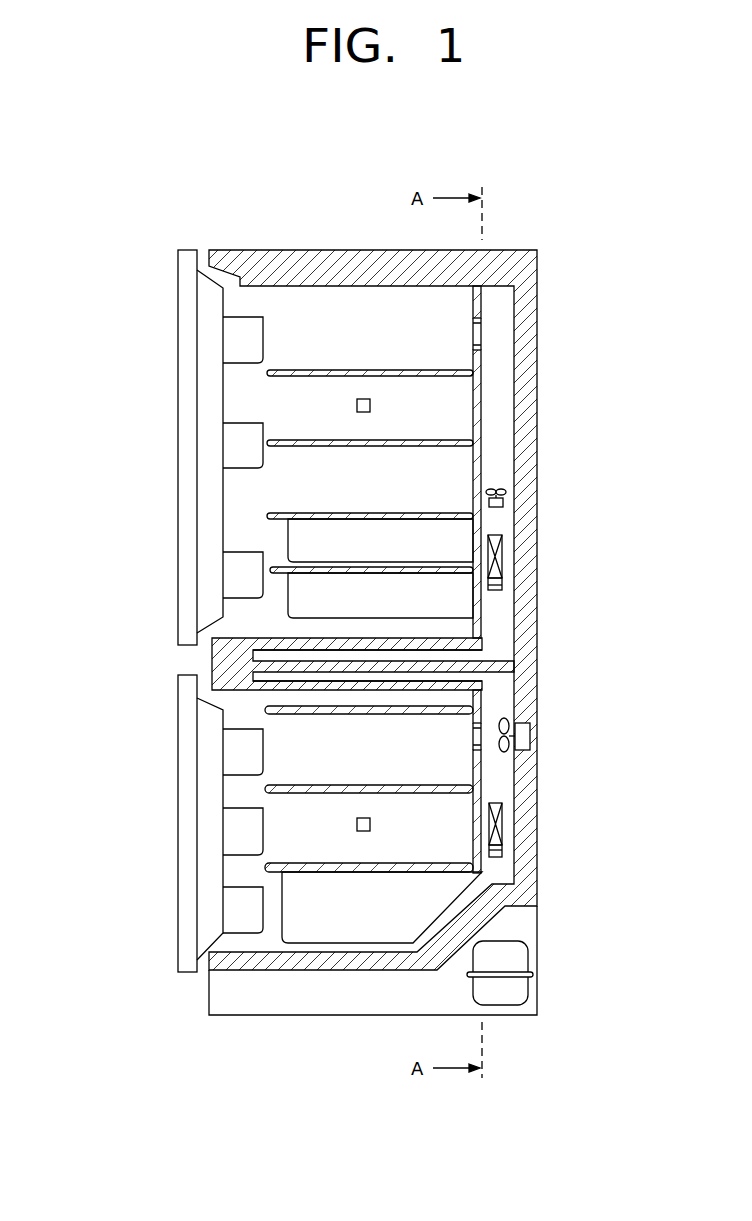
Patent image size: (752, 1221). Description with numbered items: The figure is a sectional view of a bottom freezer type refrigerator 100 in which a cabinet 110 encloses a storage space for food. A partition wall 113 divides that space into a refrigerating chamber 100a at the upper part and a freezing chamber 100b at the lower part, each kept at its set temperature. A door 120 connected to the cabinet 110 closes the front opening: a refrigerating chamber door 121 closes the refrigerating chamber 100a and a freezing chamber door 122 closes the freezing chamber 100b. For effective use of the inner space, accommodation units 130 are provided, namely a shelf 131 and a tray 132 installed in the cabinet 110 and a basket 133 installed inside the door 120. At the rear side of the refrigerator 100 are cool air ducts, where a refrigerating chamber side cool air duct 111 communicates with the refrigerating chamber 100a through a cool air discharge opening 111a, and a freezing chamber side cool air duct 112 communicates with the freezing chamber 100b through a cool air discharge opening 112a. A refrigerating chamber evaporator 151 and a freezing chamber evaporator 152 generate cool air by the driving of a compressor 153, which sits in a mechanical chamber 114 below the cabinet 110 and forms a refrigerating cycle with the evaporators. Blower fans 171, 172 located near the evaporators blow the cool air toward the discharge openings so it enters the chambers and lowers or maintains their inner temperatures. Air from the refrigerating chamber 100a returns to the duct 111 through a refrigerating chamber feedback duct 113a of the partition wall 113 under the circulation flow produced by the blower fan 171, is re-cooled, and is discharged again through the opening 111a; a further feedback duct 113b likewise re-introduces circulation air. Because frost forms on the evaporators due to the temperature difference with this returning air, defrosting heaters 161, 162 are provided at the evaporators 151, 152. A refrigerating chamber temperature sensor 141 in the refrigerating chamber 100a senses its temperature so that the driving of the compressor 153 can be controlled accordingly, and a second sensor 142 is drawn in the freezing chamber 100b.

The refrigerator 100 is at (556, 229).
The refrigerating chamber 100a is at (287, 340).
The freezing chamber 100b is at (287, 750).
The cabinet 110 is at (319, 262).
The refrigerating chamber side cool air duct 111 is at (493, 370).
The cool air discharge opening 111a is at (473, 329).
The freezing chamber side cool air duct 112 is at (494, 773).
The cool air discharge opening 112a is at (474, 741).
The partition wall 113 is at (370, 662).
The refrigerating chamber feedback duct 113a is at (258, 646).
The feedback duct 113b is at (245, 682).
The mechanical chamber 114 is at (442, 987).
The door 120 is at (88, 620).
The refrigerating chamber door 121 is at (185, 626).
The freezing chamber door 122 is at (183, 688).
The accommodation unit 130 is at (88, 423).
The shelf 131 is at (276, 374).
The tray 132 is at (307, 537).
The basket 133 is at (235, 446).
The refrigerating chamber temperature sensor 141 is at (370, 406).
The second temperature sensor 142 is at (357, 826).
The refrigerating chamber evaporator 151 is at (500, 558).
The freezing chamber evaporator 152 is at (502, 822).
The compressor 153 is at (520, 962).
The defrosting heater 161 is at (500, 585).
The defrosting heater 162 is at (502, 850).
The blower fan 171 is at (505, 491).
The blower fan 172 is at (510, 722).